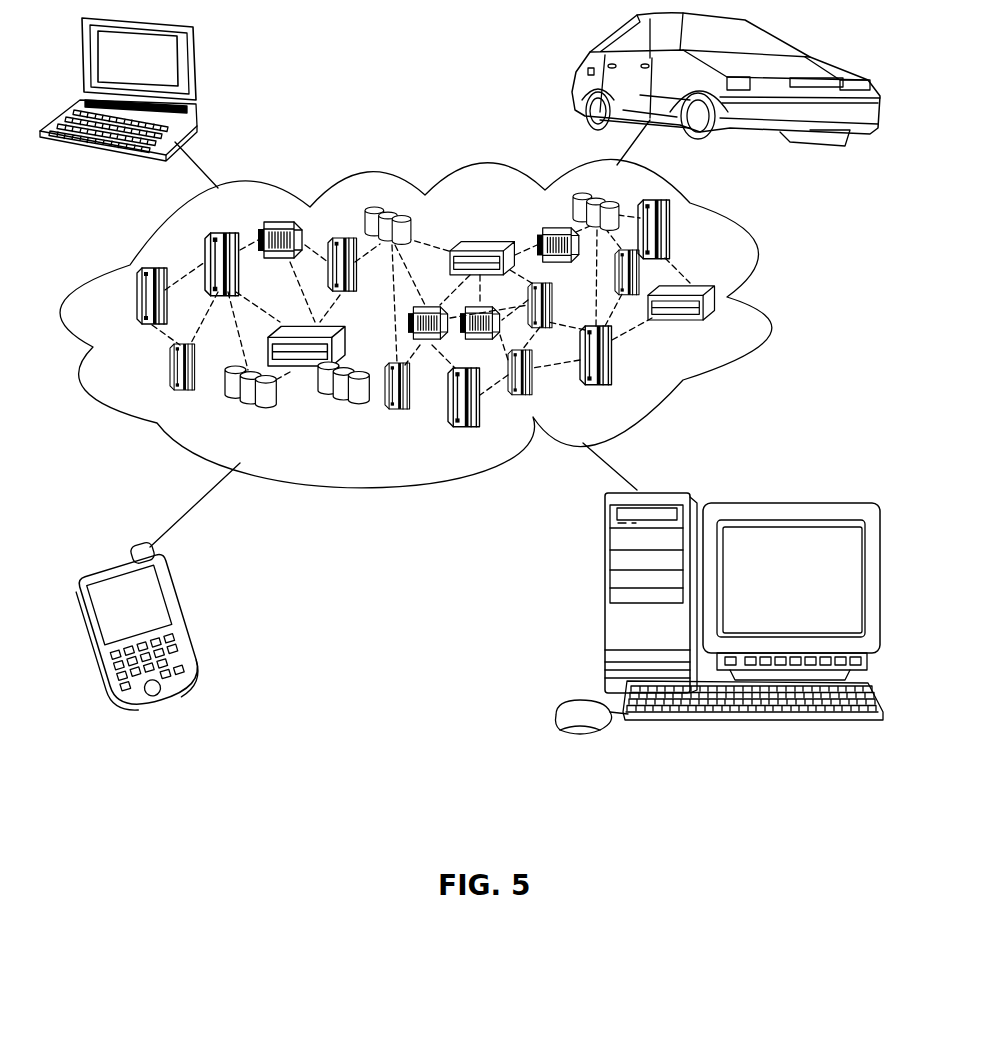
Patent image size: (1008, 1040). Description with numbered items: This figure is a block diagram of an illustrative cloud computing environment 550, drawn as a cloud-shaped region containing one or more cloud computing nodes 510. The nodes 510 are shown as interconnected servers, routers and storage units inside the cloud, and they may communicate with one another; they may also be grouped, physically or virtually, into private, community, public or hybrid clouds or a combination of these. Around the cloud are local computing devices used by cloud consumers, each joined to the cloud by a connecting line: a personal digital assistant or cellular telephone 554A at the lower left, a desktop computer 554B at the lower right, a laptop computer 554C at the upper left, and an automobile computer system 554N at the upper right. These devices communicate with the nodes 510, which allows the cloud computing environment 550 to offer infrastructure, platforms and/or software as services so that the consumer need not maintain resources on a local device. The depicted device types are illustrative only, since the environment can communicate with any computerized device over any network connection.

The cloud computing environment 550 is at (760, 260).
The cloud computing nodes 510 is at (742, 323).
The laptop computer 554C is at (197, 65).
The automobile computer system 554N is at (580, 67).
The personal digital assistant (PDA) or cellular telephone 554A is at (187, 620).
The desktop computer 554B is at (603, 602).